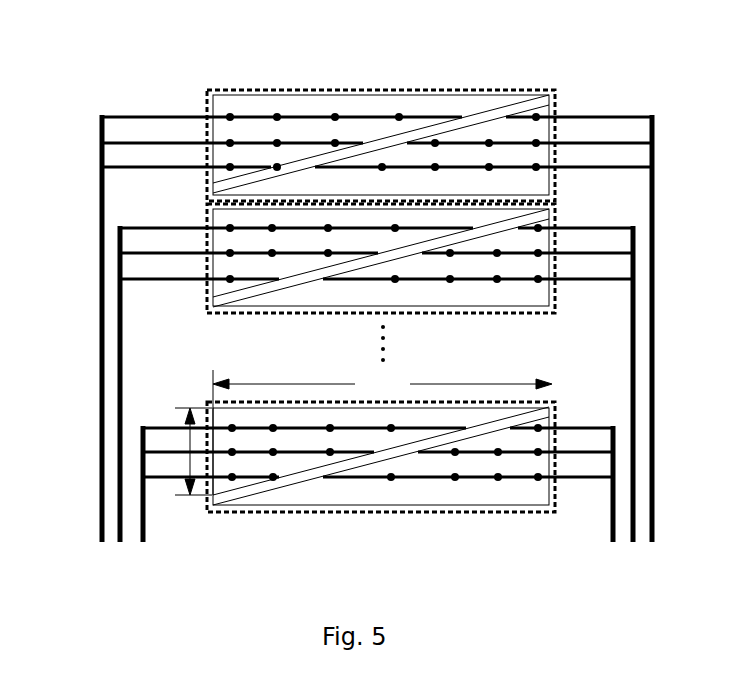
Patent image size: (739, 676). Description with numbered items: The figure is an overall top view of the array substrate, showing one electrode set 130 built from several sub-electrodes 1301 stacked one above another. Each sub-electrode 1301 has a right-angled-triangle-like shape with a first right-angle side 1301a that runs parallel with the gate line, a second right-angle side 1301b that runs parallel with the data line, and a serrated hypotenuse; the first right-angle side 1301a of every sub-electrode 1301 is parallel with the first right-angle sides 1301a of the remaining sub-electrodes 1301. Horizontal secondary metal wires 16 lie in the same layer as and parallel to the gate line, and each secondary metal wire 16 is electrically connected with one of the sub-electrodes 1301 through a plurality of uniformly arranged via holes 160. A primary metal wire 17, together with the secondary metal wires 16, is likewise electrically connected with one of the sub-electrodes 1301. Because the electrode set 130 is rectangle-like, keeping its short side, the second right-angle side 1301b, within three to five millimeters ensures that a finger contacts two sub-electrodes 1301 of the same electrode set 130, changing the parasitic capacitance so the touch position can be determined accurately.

The secondary metal wire 16 is at (620, 305).
The primary metal wire 17 is at (100, 215).
The electrode set 130 is at (381, 276).
The sub-electrode 1301 is at (406, 192).
The via hole 160 is at (433, 309).
The first right-angle side 1301a is at (382, 432).
The second right-angle side 1301b is at (221, 477).